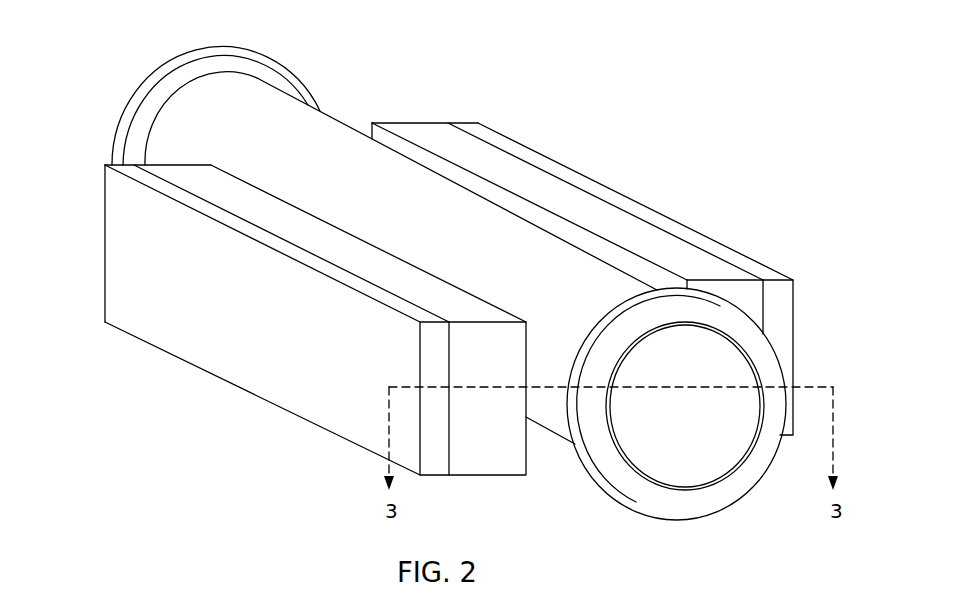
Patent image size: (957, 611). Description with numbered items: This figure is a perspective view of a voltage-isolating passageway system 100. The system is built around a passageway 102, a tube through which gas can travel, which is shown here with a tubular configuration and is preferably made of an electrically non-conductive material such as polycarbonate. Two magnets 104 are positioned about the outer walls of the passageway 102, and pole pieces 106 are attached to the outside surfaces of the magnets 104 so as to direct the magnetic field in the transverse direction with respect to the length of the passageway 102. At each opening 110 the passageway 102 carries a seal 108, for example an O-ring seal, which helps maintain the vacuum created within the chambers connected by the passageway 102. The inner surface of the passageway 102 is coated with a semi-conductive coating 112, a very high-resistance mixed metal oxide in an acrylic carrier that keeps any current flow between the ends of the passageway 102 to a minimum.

The voltage-isolating passageway system 100 is at (605, 95).
The passageway 102 is at (322, 112).
The magnets 104 is at (653, 240).
The pole pieces 106 is at (760, 260).
The seal 108 is at (187, 52).
The opening 110 is at (728, 438).
The semi-conductive coating 112 is at (647, 478).